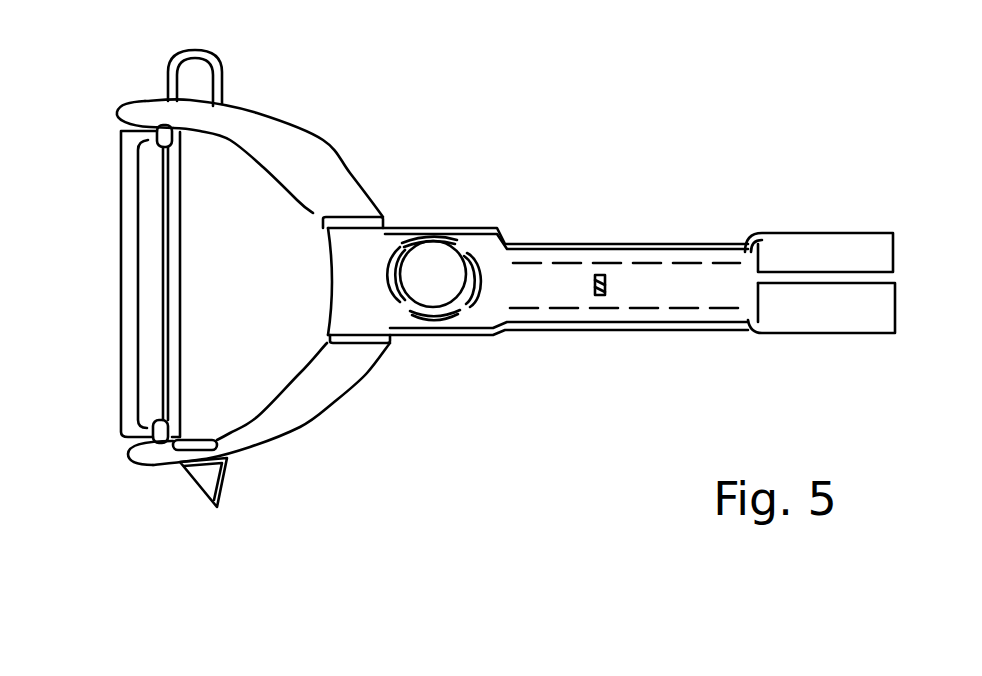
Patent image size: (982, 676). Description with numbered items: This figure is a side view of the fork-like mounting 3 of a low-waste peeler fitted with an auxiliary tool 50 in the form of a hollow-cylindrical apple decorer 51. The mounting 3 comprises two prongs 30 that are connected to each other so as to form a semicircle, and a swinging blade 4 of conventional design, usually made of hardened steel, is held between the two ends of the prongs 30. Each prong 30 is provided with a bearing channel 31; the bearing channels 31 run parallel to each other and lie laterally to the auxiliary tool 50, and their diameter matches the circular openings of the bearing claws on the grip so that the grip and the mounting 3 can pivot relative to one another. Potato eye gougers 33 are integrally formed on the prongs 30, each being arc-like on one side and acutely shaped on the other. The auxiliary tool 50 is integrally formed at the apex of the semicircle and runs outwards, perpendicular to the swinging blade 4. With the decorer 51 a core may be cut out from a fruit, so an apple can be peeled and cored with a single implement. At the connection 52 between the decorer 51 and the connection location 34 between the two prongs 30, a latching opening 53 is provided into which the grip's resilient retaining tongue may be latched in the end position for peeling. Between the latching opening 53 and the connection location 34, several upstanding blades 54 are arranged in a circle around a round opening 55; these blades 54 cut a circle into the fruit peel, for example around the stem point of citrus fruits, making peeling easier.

The mounting 3 is at (293, 109).
The swinging blade 4 is at (125, 272).
The prongs 30 is at (328, 164).
The bearing channels 31 is at (360, 216).
The potato eye gougers 33 is at (168, 64).
The connection location 34 is at (330, 280).
The auxiliary tool 50 is at (659, 354).
The decorer 51 is at (830, 315).
The connection 52 is at (540, 280).
The latching opening 53 is at (612, 280).
The blades 54 is at (482, 285).
The round opening 55 is at (428, 293).